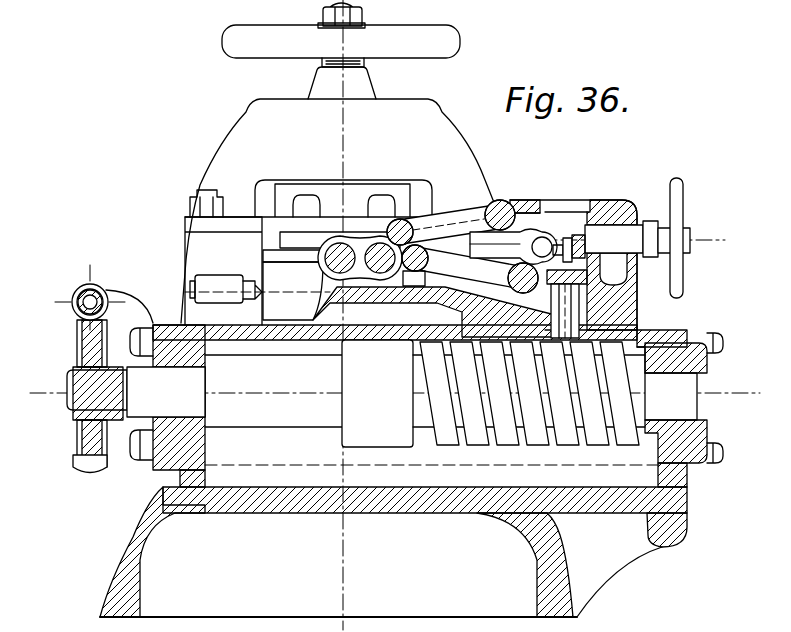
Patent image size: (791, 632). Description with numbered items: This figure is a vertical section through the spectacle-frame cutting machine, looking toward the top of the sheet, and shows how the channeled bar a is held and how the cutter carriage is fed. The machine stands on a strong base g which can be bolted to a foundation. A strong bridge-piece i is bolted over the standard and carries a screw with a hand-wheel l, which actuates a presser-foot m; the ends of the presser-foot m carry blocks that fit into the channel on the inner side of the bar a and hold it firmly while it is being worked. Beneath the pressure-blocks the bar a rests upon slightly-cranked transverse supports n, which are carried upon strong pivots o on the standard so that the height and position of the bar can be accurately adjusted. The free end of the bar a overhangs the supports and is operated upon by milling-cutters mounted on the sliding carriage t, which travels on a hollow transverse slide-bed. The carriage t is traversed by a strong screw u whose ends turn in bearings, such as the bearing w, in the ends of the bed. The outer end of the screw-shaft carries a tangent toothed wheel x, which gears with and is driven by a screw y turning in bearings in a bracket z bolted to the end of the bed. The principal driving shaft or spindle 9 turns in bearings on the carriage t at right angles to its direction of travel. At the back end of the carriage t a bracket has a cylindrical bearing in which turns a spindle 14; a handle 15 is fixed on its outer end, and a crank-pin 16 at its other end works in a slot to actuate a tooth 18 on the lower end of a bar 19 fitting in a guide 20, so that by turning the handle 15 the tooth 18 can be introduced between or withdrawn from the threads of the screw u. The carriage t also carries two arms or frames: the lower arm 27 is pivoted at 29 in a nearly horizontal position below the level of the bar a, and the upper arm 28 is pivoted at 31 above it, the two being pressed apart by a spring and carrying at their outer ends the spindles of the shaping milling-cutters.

The hand-wheel l is at (409, 33).
The bridge-piece i is at (338, 211).
The channeled bar a is at (262, 246).
The presser-foot m is at (322, 242).
The pivots o is at (226, 281).
The principal driving shaft 9 is at (293, 272).
The transverse supports n is at (293, 291).
The carriage t is at (396, 296).
The upper arm 28 is at (458, 221).
The pivot of upper arm 31 is at (503, 203).
The lower arm 27 is at (468, 267).
The pivot of lower arm 29 is at (512, 273).
The spindle 14 is at (632, 231).
The handle 15 is at (680, 186).
The crank-pin 16 is at (581, 243).
The bar 19 is at (568, 314).
The guide 20 is at (600, 300).
The tooth 18 is at (611, 352).
The screw u is at (537, 421).
The bearing w is at (712, 389).
The tangent toothed wheel x is at (80, 348).
The screw y is at (70, 284).
The bracket z is at (108, 303).
The base g is at (393, 552).